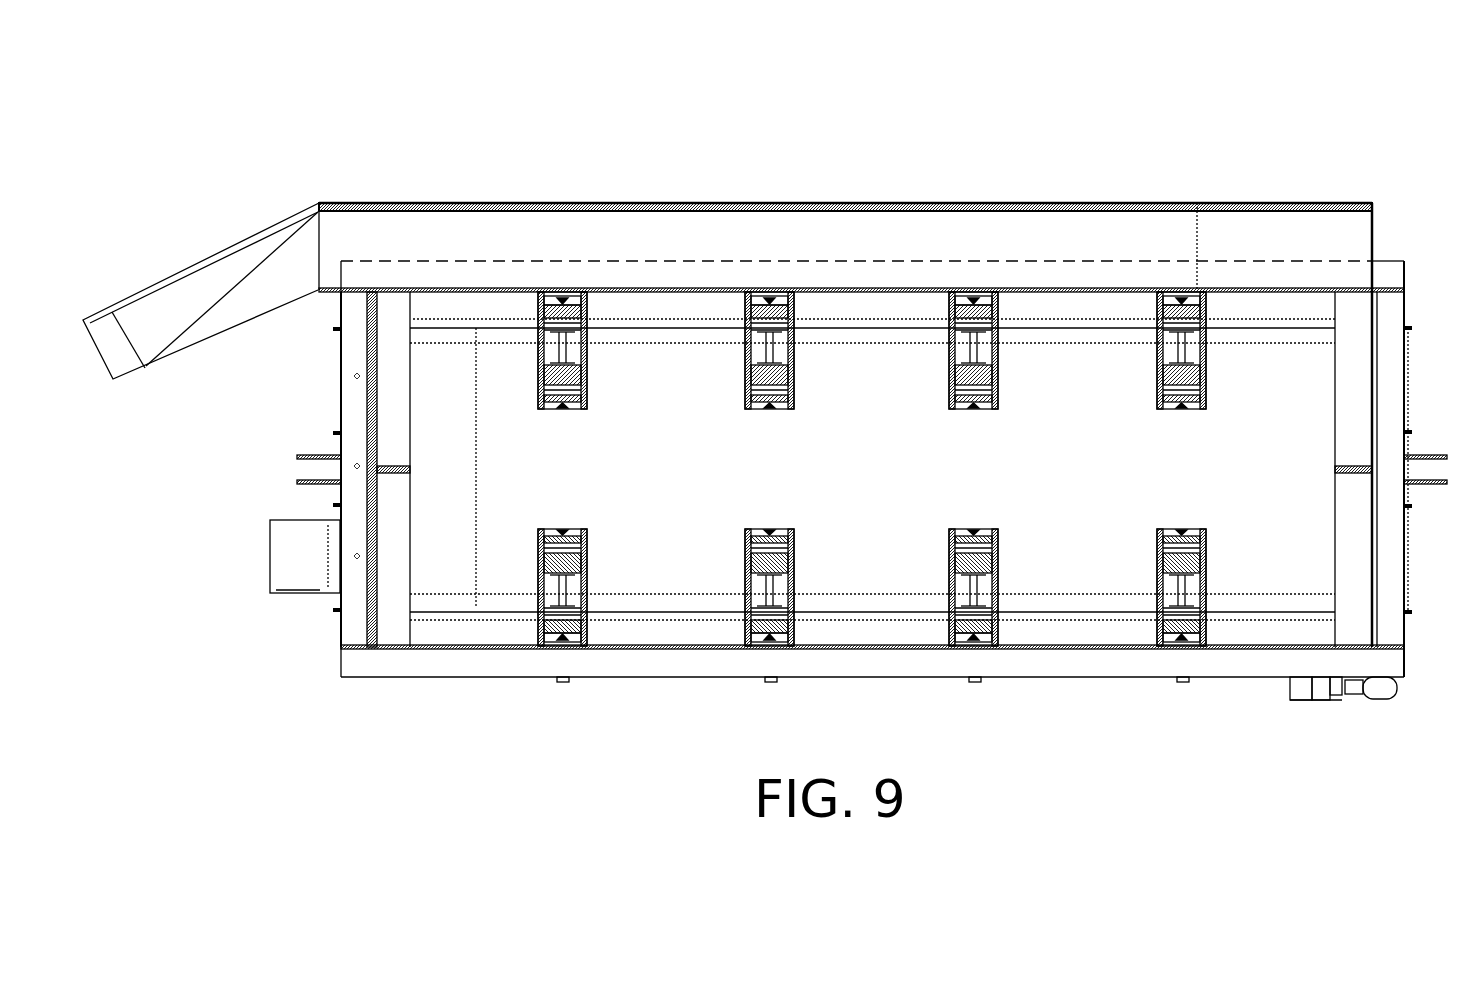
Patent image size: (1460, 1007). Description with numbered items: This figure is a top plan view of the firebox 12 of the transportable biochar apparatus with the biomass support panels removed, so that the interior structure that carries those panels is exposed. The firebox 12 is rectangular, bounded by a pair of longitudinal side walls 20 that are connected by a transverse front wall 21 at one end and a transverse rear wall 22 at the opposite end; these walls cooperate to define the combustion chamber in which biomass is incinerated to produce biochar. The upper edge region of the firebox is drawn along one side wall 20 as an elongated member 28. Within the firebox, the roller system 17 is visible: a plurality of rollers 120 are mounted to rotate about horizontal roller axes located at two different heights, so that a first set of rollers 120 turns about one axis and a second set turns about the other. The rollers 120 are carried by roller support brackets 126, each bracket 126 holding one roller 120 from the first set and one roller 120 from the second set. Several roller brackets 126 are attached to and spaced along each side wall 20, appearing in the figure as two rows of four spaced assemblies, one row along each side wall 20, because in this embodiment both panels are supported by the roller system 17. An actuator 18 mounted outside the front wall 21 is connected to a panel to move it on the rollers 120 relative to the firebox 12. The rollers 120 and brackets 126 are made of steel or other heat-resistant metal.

The firebox 12 is at (1228, 139).
The roller system 17 is at (1197, 432).
The actuator 18 is at (290, 556).
The longitudinal side walls 20 is at (873, 259).
The transverse front wall 21 is at (352, 368).
The transverse rear wall 22 is at (1395, 390).
The top rail 28 is at (676, 237).
The rollers 120 is at (545, 320).
The roller support brackets 126 is at (588, 360).